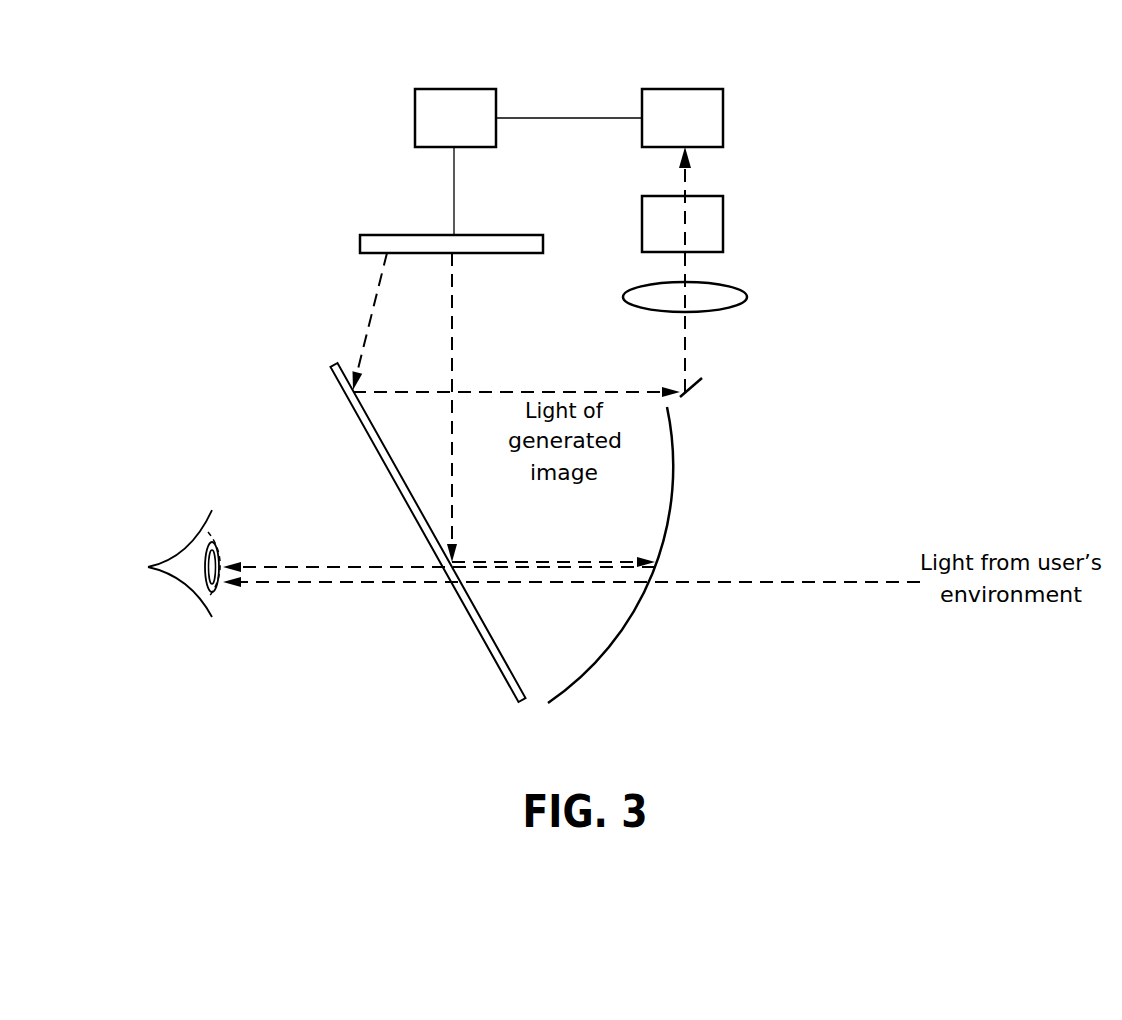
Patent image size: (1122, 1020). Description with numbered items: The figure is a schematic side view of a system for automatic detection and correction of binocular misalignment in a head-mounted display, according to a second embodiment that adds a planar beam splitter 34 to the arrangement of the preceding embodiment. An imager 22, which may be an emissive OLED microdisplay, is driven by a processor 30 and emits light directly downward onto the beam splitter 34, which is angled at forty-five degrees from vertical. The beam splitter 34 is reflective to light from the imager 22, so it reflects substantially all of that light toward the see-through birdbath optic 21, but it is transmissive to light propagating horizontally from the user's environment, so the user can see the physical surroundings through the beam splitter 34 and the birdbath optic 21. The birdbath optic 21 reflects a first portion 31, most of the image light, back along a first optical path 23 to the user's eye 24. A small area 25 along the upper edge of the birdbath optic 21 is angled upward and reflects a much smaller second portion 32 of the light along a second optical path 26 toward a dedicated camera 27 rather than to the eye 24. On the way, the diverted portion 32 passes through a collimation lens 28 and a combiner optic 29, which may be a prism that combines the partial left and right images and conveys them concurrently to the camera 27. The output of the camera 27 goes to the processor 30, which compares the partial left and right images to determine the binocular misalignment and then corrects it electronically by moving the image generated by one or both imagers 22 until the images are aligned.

The birdbath optic 21 is at (673, 510).
The imager 22 is at (360, 252).
The first optical path 23 is at (317, 567).
The user's eye 24 is at (212, 543).
The small area of the birdbath optic 25 is at (693, 388).
The second optical path 26 is at (687, 340).
The camera 27 is at (723, 112).
The collimation lens 28 is at (747, 297).
The combiner optic 29 is at (723, 222).
The processor 30 is at (496, 100).
The first portion of the light 31 is at (450, 477).
The second portion of the light 32 is at (367, 332).
The planar beam splitter 34 is at (480, 608).